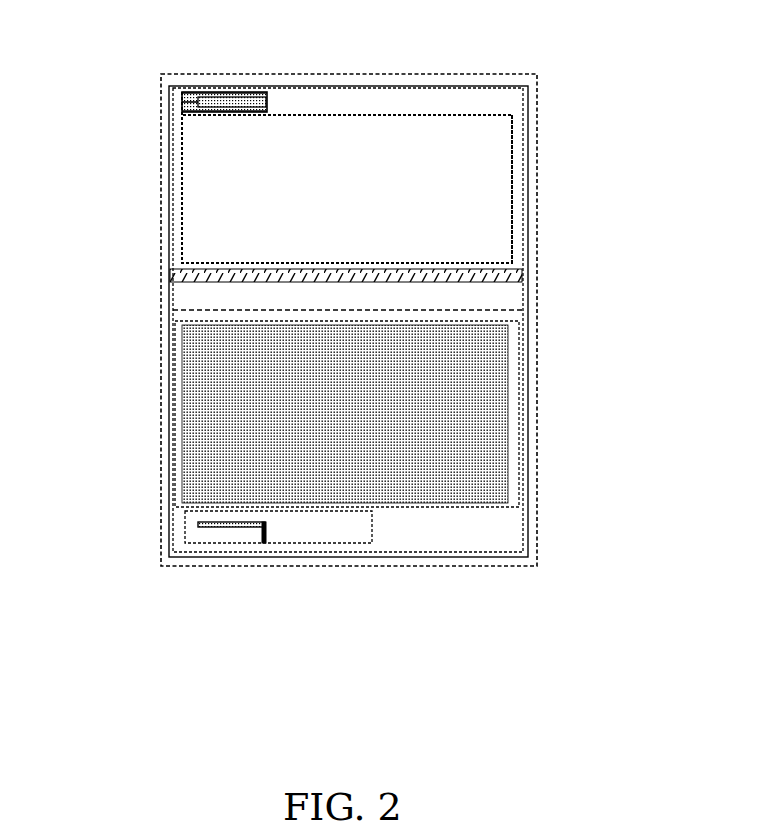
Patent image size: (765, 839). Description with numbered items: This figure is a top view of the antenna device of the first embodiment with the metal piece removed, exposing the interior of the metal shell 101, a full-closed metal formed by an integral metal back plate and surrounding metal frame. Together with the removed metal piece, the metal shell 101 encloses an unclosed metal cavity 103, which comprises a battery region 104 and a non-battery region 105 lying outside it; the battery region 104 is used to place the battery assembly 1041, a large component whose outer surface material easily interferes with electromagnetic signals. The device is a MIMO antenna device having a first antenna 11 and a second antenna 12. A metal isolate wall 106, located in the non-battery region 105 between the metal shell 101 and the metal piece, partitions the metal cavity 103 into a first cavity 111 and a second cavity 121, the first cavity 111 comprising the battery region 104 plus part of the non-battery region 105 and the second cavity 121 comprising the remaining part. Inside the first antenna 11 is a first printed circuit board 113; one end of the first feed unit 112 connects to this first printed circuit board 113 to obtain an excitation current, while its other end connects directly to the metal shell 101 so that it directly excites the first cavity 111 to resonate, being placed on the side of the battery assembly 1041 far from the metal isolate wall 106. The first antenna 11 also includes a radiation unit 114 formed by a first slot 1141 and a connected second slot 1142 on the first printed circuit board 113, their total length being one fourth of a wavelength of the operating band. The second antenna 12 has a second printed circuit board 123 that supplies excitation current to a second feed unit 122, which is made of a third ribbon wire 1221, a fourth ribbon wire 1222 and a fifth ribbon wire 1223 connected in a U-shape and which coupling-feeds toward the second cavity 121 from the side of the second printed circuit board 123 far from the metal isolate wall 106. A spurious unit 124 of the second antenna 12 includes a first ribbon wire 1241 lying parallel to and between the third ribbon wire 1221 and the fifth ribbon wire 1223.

The metal shell 101 is at (512, 74).
The first antenna 11 is at (513, 450).
The metal isolate wall 106 is at (525, 272).
The first cavity 111 is at (504, 298).
The second antenna 12 is at (514, 213).
The second printed circuit board 123 is at (512, 120).
The second cavity 121 is at (500, 265).
The spurious unit 124 is at (228, 95).
The first ribbon wire 1241 is at (238, 102).
The second feed unit 122 is at (68, 108).
The fifth ribbon wire 1223 is at (196, 98).
The fourth ribbon wire 1222 is at (184, 104).
The third ribbon wire 1221 is at (183, 112).
The metal cavity 103 is at (692, 317).
The non-battery region 105 is at (519, 310).
The battery region 104 is at (510, 338).
The battery assembly 1041 is at (496, 368).
The first printed circuit board 113 is at (335, 545).
The first feed unit 112 is at (280, 522).
The radiation unit 114 is at (78, 583).
The first slot 1141 is at (205, 528).
The second slot 1142 is at (263, 535).